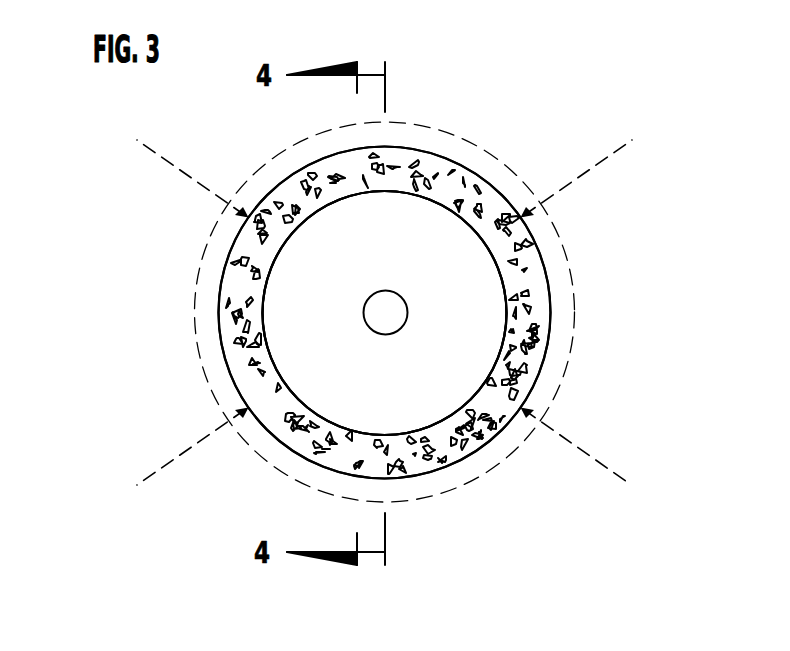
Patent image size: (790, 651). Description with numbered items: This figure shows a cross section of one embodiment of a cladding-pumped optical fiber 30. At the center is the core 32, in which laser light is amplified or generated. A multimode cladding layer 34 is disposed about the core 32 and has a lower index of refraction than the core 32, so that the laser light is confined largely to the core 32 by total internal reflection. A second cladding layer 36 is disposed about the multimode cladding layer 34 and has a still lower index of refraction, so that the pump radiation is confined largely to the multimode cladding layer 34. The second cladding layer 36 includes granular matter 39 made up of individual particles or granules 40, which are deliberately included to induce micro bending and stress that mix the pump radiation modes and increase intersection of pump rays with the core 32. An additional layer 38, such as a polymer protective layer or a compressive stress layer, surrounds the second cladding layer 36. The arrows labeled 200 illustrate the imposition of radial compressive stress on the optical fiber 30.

The cladding-pumped optical fiber 30 is at (620, 203).
The core 32 is at (404, 322).
The multimode cladding layer 34 is at (369, 259).
The second cladding layer 36 is at (549, 360).
The additional layer 38 is at (502, 462).
The granular matter 39 is at (531, 377).
The granules 40 is at (449, 182).
The radial compressive stress 200 is at (600, 162).